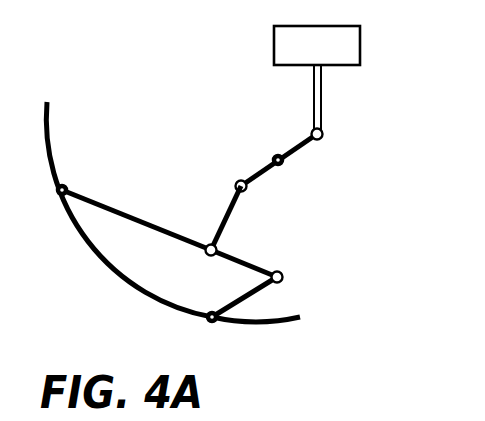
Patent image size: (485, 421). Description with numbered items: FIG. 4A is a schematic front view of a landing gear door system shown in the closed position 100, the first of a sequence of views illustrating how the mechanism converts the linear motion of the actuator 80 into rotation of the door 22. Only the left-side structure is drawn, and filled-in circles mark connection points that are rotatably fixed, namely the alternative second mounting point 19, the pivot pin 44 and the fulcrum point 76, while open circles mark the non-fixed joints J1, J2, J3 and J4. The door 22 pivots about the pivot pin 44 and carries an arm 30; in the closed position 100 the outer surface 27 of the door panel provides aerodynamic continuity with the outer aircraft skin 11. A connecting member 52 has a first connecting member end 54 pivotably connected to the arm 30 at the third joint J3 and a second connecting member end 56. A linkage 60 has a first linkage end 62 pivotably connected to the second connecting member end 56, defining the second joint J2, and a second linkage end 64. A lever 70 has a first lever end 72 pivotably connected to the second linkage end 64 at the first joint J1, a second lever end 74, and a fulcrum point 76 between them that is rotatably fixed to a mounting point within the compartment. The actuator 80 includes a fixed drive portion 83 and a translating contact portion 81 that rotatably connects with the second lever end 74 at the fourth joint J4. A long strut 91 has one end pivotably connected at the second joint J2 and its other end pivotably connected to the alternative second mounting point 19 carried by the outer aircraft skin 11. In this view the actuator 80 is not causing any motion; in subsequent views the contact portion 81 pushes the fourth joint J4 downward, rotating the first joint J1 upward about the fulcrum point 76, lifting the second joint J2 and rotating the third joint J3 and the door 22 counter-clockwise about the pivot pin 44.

The actuator 80 is at (256, 43).
The drive portion 83 is at (360, 47).
The contact portion 81 is at (313, 102).
The fulcrum point 76 is at (273, 155).
The fourth joint J4 is at (376, 126).
The second lever end 74 is at (324, 135).
The first joint J1 is at (167, 155).
The second linkage end 64 is at (167, 155).
The first lever end 72 is at (236, 184).
The lever 70 is at (257, 172).
The linkage 60 is at (223, 217).
The strut 91 is at (148, 222).
The connecting member 52 is at (249, 262).
The arm 30 is at (238, 296).
The third joint J3 is at (351, 278).
The first connecting member end 54 is at (283, 277).
The second joint J2 is at (117, 292).
The second connecting member end 56 is at (117, 292).
The first linkage end 62 is at (209, 255).
The outer aircraft skin 11 is at (107, 268).
The door 22 is at (296, 336).
The outer surface 27 is at (258, 323).
The alternative second mounting point 19 is at (59, 196).
The pivot pin 44 is at (208, 322).
The closed position 100 is at (355, 205).